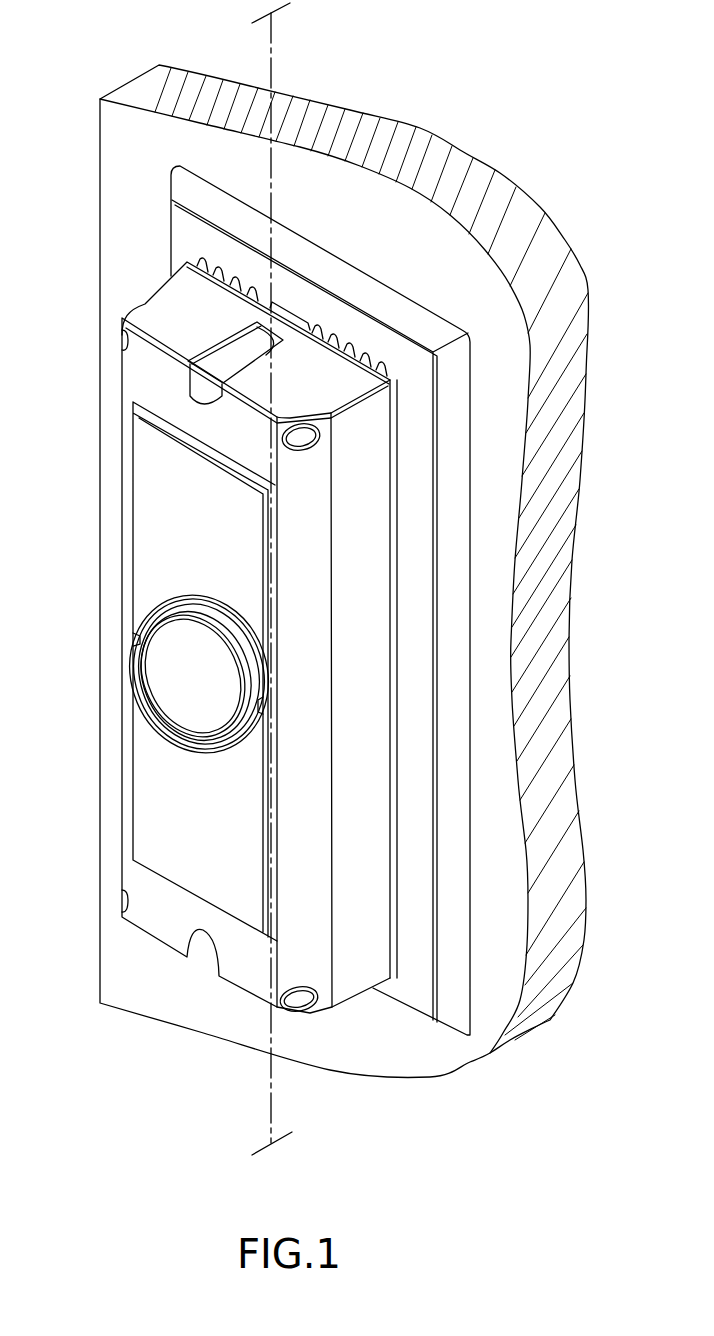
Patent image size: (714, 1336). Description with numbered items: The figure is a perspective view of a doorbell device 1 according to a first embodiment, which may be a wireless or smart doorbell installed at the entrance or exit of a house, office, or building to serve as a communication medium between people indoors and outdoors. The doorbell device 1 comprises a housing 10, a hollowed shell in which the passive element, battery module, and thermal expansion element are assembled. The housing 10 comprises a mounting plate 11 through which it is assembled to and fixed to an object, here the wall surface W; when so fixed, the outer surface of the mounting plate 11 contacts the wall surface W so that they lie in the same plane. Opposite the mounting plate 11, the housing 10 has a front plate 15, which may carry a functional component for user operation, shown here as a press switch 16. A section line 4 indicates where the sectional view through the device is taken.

The doorbell device 1 is at (137, 235).
The section line 4- 4 is at (280, 1148).
The housing 10 is at (117, 295).
The mounting plate 11 is at (455, 408).
The front plate 15 is at (130, 378).
The press switch 16 is at (173, 677).
The wall surface W is at (477, 275).